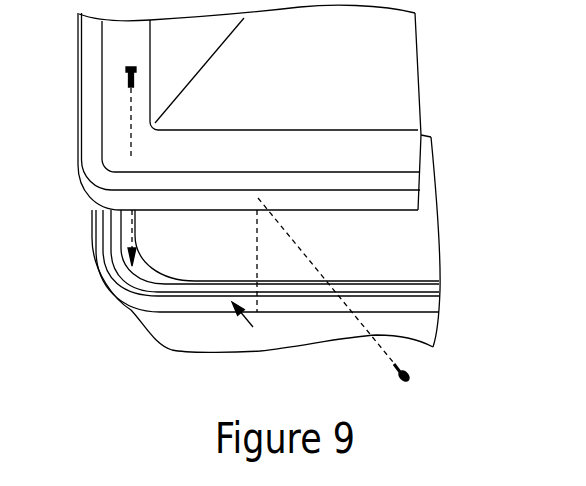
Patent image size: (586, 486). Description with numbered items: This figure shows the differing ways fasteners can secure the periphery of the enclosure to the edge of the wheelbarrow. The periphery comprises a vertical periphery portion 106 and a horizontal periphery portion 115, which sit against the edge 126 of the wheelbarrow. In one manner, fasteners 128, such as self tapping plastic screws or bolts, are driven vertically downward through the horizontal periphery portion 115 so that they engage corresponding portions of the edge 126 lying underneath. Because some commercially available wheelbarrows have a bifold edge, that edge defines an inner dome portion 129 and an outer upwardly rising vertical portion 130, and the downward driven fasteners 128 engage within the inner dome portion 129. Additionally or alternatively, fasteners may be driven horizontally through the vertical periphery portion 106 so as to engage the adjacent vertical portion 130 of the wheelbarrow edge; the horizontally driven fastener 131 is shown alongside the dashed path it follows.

The vertical periphery portion 106 is at (408, 200).
The horizontal periphery portion 115 is at (383, 145).
The edge of the wheelbarrow 126 is at (316, 244).
The fasteners 128 is at (127, 69).
The inner dome portion 129 is at (427, 285).
The outer upwardly rising vertical portion 130 is at (427, 305).
The screw 131 is at (410, 377).